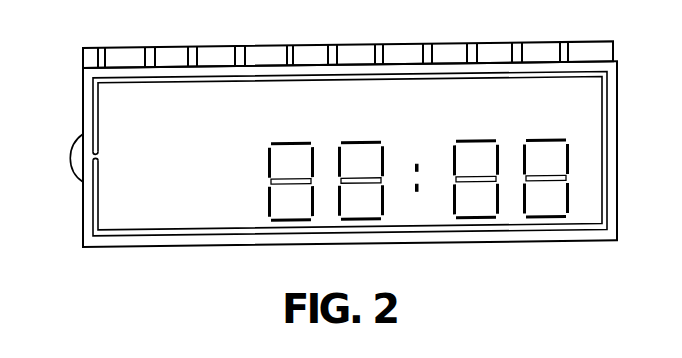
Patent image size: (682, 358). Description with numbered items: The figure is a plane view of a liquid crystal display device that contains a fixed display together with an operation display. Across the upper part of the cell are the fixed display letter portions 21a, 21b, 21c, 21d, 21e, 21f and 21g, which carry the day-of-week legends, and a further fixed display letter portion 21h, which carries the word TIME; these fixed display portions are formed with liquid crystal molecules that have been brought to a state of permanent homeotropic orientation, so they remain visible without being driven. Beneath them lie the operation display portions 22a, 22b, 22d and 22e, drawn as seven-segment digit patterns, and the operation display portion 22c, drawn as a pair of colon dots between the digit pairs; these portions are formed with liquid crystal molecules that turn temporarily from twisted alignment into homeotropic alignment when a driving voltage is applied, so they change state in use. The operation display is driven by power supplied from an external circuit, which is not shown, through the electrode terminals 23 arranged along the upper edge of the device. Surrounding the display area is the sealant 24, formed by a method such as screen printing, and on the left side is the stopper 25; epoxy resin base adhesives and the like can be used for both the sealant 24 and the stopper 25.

The fixed display letter portion 21a is at (158, 97).
The fixed display letter portion 21b is at (217, 97).
The fixed display letter portion 21c is at (302, 96).
The fixed display letter portion 21d is at (355, 96).
The fixed display letter portion 21e is at (430, 96).
The fixed display letter portion 21f is at (488, 96).
The fixed display letter portion 21g is at (568, 96).
The fixed display letter portion 21h is at (252, 150).
The operation display portion 22a is at (292, 224).
The operation display portion 22b is at (353, 225).
The operation display portion 22c is at (446, 152).
The operation display portion 22d is at (473, 225).
The operation display portion 22e is at (547, 226).
The electrode terminals 23 is at (101, 50).
The sealant 24 is at (605, 134).
The stopper 25 is at (71, 148).